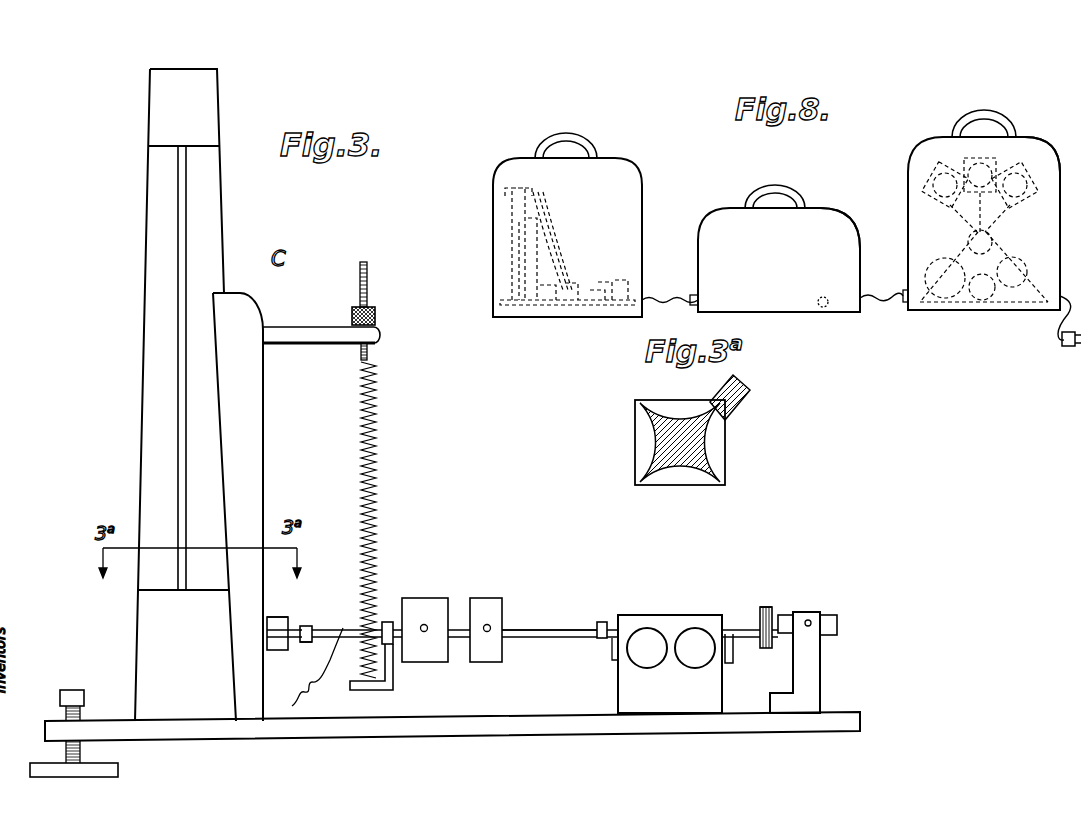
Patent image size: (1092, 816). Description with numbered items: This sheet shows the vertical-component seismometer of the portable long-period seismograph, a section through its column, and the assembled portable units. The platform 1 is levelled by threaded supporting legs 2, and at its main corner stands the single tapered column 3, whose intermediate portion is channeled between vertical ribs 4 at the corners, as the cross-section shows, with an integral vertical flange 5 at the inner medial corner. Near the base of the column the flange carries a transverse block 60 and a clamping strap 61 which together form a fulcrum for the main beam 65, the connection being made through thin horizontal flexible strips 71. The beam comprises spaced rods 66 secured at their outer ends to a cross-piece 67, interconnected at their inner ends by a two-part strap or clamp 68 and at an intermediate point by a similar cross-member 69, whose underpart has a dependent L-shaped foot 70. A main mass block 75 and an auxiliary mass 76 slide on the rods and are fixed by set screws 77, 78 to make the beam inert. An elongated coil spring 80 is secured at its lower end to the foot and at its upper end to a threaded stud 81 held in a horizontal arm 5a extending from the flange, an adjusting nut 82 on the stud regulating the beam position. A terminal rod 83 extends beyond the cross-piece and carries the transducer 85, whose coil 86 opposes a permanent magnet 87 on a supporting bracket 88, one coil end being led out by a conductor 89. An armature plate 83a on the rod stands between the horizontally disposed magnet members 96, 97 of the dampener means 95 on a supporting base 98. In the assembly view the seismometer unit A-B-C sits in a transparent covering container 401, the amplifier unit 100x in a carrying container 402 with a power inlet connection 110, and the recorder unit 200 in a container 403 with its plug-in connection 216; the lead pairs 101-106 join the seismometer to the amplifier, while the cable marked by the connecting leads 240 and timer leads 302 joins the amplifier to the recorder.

In FIG. 3, the platform 1 is at (526, 727).
In FIG. 3, the supporting legs 2 is at (60, 693).
In FIG. 3, the column 3 is at (150, 121).
In FIG. 3A, the column 3 is at (635, 450).
In FIG. 3, the vertical ribs 4 is at (178, 204).
In FIG. 3A, the vertical ribs 4 is at (640, 404).
In FIG. 3, the vertical flange 5 is at (262, 433).
In FIG. 3A, the vertical flange 5 is at (745, 399).
In FIG. 3, the horizontal arm 5a is at (305, 327).
In FIG. 3, the transverse block 60 is at (283, 650).
In FIG. 3, the clamping strap 61 is at (277, 617).
In FIG. 3, the main beam 65 is at (548, 614).
In FIG. 3, the rods 66 is at (337, 630).
In FIG. 3, the cross-piece 67 is at (598, 638).
In FIG. 3, the two-part strap or clamp 68 is at (307, 642).
In FIG. 3, the cross-member 69 is at (388, 622).
In FIG. 3, the L-shaped foot 70 is at (355, 690).
In FIG. 3, the flexible strips 71 is at (305, 626).
In FIG. 3, the main mass block 75 is at (427, 598).
In FIG. 3, the auxiliary mass 76 is at (486, 598).
In FIG. 3, the set screw 77 is at (424, 632).
In FIG. 3, the set screw 78 is at (487, 632).
In FIG. 3, the coil spring 80 is at (377, 437).
In FIG. 3, the threaded stud 81 is at (368, 352).
In FIG. 3, the adjusting nut 82 is at (377, 318).
In FIG. 3, the terminal rod 83 is at (746, 637).
In FIG. 3, the armature plate 83a is at (612, 662).
In FIG. 3, the transducer 85 is at (771, 586).
In FIG. 3, the coil 86 is at (765, 607).
In FIG. 3, the permanent magnet 87 is at (790, 615).
In FIG. 3, the supporting bracket 88 is at (812, 697).
In FIG. 3, the conductor 89 is at (319, 667).
In FIG. 3, the dampener means 95 is at (671, 612).
In FIG. 3, the magnet member 96 is at (645, 668).
In FIG. 3, the magnet member 97 is at (697, 668).
In FIG. 3, the supporting base 98 is at (677, 705).
In FIG. 8, the covering container 401 is at (625, 180).
In FIG. 8, the carrying container 402 is at (726, 214).
In FIG. 8, the container 403 is at (925, 152).
In FIG. 8, the amplifier unit 100x is at (825, 202).
In FIG. 8, the lead pairs 101-106 is at (670, 306).
In FIG. 8, the power inlet connection 110 is at (818, 308).
In FIG. 8, the connecting leads 240 is at (885, 304).
In FIG. 8, the timer leads 302 is at (904, 326).
In FIG. 8, the recorder unit 200 is at (1046, 136).
In FIG. 8, the plug-in connection 216 is at (1054, 331).
In FIG. 8, the seismometer unit A-B-C is at (500, 146).